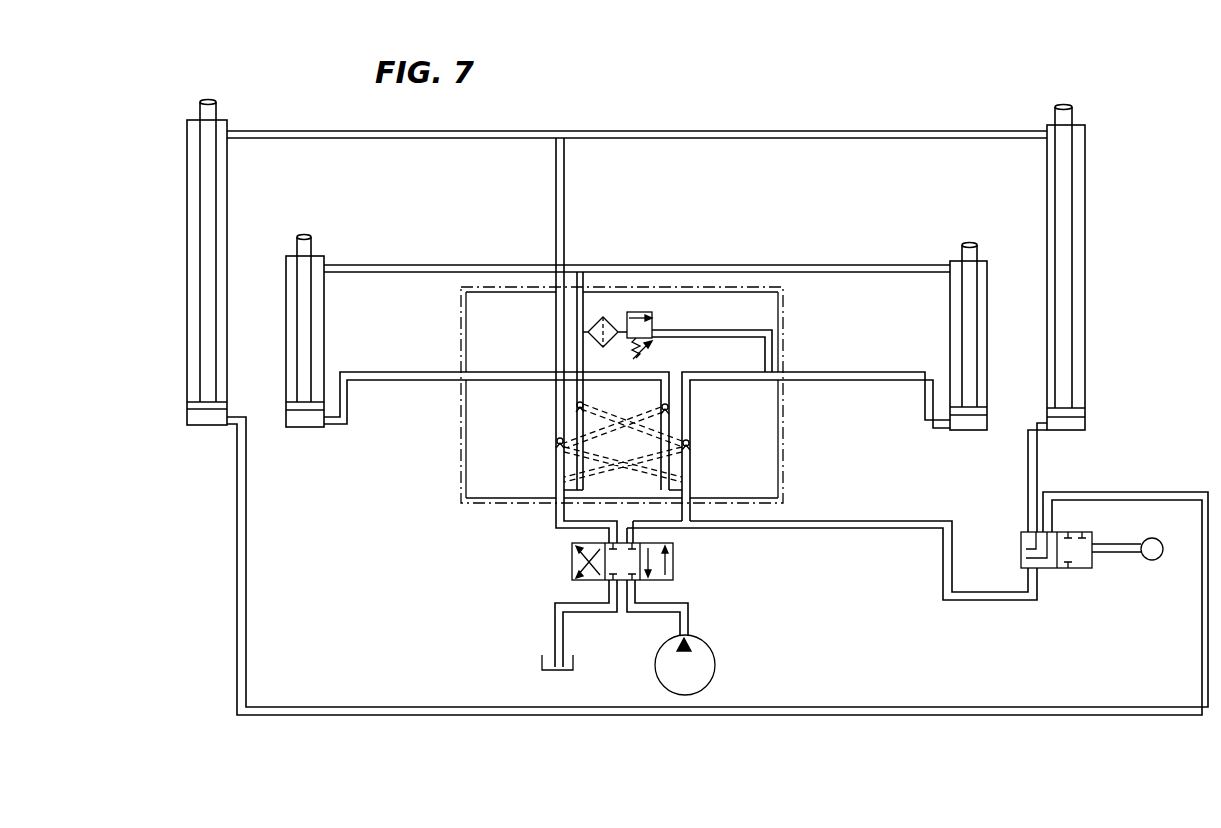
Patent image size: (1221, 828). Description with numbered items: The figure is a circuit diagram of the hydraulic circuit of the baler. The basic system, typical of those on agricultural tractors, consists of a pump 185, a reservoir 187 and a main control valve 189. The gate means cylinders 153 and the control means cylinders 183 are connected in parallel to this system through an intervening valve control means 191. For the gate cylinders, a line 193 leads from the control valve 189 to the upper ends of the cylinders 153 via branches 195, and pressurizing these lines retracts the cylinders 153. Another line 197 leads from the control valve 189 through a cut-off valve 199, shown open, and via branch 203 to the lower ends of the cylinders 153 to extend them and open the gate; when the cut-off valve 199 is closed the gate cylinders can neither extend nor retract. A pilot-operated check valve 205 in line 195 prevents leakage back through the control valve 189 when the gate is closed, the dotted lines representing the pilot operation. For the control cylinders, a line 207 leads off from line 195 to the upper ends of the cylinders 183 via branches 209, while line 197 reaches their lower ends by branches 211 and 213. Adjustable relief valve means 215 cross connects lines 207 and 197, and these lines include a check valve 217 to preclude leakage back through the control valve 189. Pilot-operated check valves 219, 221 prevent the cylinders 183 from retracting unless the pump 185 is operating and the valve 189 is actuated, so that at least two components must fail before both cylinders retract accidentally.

The gate means cylinders 153 is at (227, 167).
The control means cylinders 183 is at (324, 293).
The pump 185 is at (702, 648).
The reservoir 187 is at (541, 664).
The main control valve 189 is at (674, 564).
The valve control means 191 is at (485, 504).
The line 193 is at (556, 512).
The branches 195 is at (750, 131).
The line 197 is at (692, 512).
The cut-off valve 199 is at (1070, 568).
The branch 203 is at (1200, 637).
The pilot-operated check valve 205 is at (556, 443).
The line 207 is at (586, 490).
The branches 209 is at (825, 265).
The branch 211 is at (723, 350).
The branch 213 is at (508, 372).
The adjustable relief valve means 215 is at (647, 312).
The check valve 217 is at (576, 406).
The pilot-operated check valve 219 is at (690, 441).
The pilot-operated check valve 221 is at (670, 407).